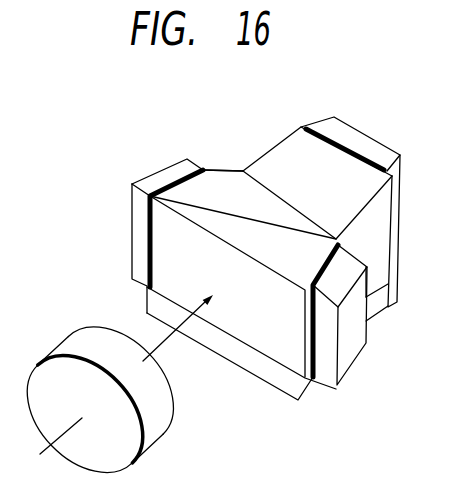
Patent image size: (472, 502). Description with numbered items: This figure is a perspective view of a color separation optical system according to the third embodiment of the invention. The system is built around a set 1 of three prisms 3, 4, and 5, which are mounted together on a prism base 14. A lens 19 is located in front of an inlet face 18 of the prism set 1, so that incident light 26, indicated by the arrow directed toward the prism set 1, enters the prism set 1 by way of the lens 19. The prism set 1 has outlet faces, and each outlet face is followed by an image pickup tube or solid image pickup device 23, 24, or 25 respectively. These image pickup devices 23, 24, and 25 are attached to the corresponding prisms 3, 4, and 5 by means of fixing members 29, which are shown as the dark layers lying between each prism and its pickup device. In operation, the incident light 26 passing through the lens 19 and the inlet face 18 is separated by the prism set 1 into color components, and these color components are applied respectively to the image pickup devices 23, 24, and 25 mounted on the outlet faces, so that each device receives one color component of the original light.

The prism set 1 is at (379, 221).
The prism 3 is at (183, 214).
The prism 4 is at (212, 170).
The prism 5 is at (273, 153).
The prism base 14 is at (284, 384).
The inlet face 18 is at (260, 347).
The lens 19 is at (155, 436).
The image pickup device 23 is at (353, 349).
The image pickup device 24 is at (167, 173).
The image pickup device 25 is at (373, 147).
The incident light 26 is at (152, 348).
The fixing members 29 is at (143, 197).